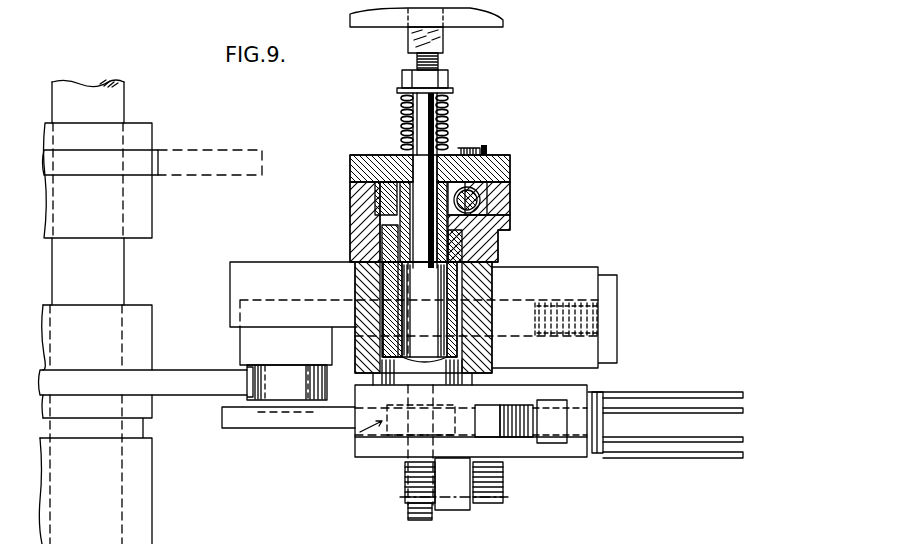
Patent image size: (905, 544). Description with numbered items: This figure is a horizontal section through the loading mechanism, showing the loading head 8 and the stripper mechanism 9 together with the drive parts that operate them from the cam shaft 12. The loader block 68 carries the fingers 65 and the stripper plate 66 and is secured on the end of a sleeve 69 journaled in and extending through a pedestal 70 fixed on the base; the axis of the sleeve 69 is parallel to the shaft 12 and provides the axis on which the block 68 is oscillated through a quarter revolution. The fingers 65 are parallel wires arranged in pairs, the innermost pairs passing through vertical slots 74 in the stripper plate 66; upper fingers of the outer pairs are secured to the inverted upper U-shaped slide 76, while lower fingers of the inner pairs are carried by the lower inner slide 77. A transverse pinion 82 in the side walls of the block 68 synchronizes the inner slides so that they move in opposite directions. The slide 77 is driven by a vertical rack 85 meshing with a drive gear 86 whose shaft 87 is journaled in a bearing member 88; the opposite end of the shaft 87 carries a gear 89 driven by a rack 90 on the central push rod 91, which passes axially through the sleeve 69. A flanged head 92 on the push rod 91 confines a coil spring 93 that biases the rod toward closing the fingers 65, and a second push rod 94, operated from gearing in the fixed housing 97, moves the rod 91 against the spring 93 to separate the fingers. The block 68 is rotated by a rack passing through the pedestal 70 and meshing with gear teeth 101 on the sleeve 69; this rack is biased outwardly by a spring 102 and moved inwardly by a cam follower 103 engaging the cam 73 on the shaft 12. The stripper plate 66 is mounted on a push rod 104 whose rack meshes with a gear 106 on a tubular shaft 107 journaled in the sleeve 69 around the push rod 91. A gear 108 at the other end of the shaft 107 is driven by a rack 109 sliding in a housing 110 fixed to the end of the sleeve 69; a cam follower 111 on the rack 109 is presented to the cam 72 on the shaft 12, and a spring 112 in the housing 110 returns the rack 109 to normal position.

The loading head 8 is at (571, 473).
The stripper mechanism 9 is at (612, 450).
The cam shaft 12 is at (124, 272).
The fingers 65 is at (702, 400).
The stripper plate 66 is at (598, 452).
The loader block 68 is at (361, 458).
The sleeve 69 is at (457, 278).
The pedestal 70 is at (493, 290).
The cam 72 is at (162, 158).
The cam 73 is at (183, 398).
The vertical slots 74 is at (604, 413).
The upper U-shaped vertical slide 76 is at (553, 400).
The lower inner slide 77 is at (493, 400).
The transverse pinion 82 is at (522, 444).
The vertical rack 85 is at (471, 463).
The drive gear 86 is at (504, 487).
The shaft 87 is at (462, 508).
The bearing member 88 is at (475, 508).
The gear 89 is at (405, 487).
The rack 90 is at (415, 515).
The push rod 91 is at (412, 136).
The flanged head 92 is at (454, 90).
The coil spring 93 is at (449, 115).
The second push rod 94 is at (451, 45).
The fixed housing 97 is at (391, 26).
The gear teeth 101 is at (367, 317).
The spring 102 is at (603, 318).
The cam follower 103 is at (253, 374).
The push rod 104 is at (313, 428).
The gear 106 is at (360, 432).
The tubular shaft 107 is at (380, 268).
The gear 108 is at (400, 193).
The rack 109 is at (382, 206).
The housing 110 is at (511, 212).
The cam follower 111 is at (484, 150).
The spring 112 is at (480, 193).